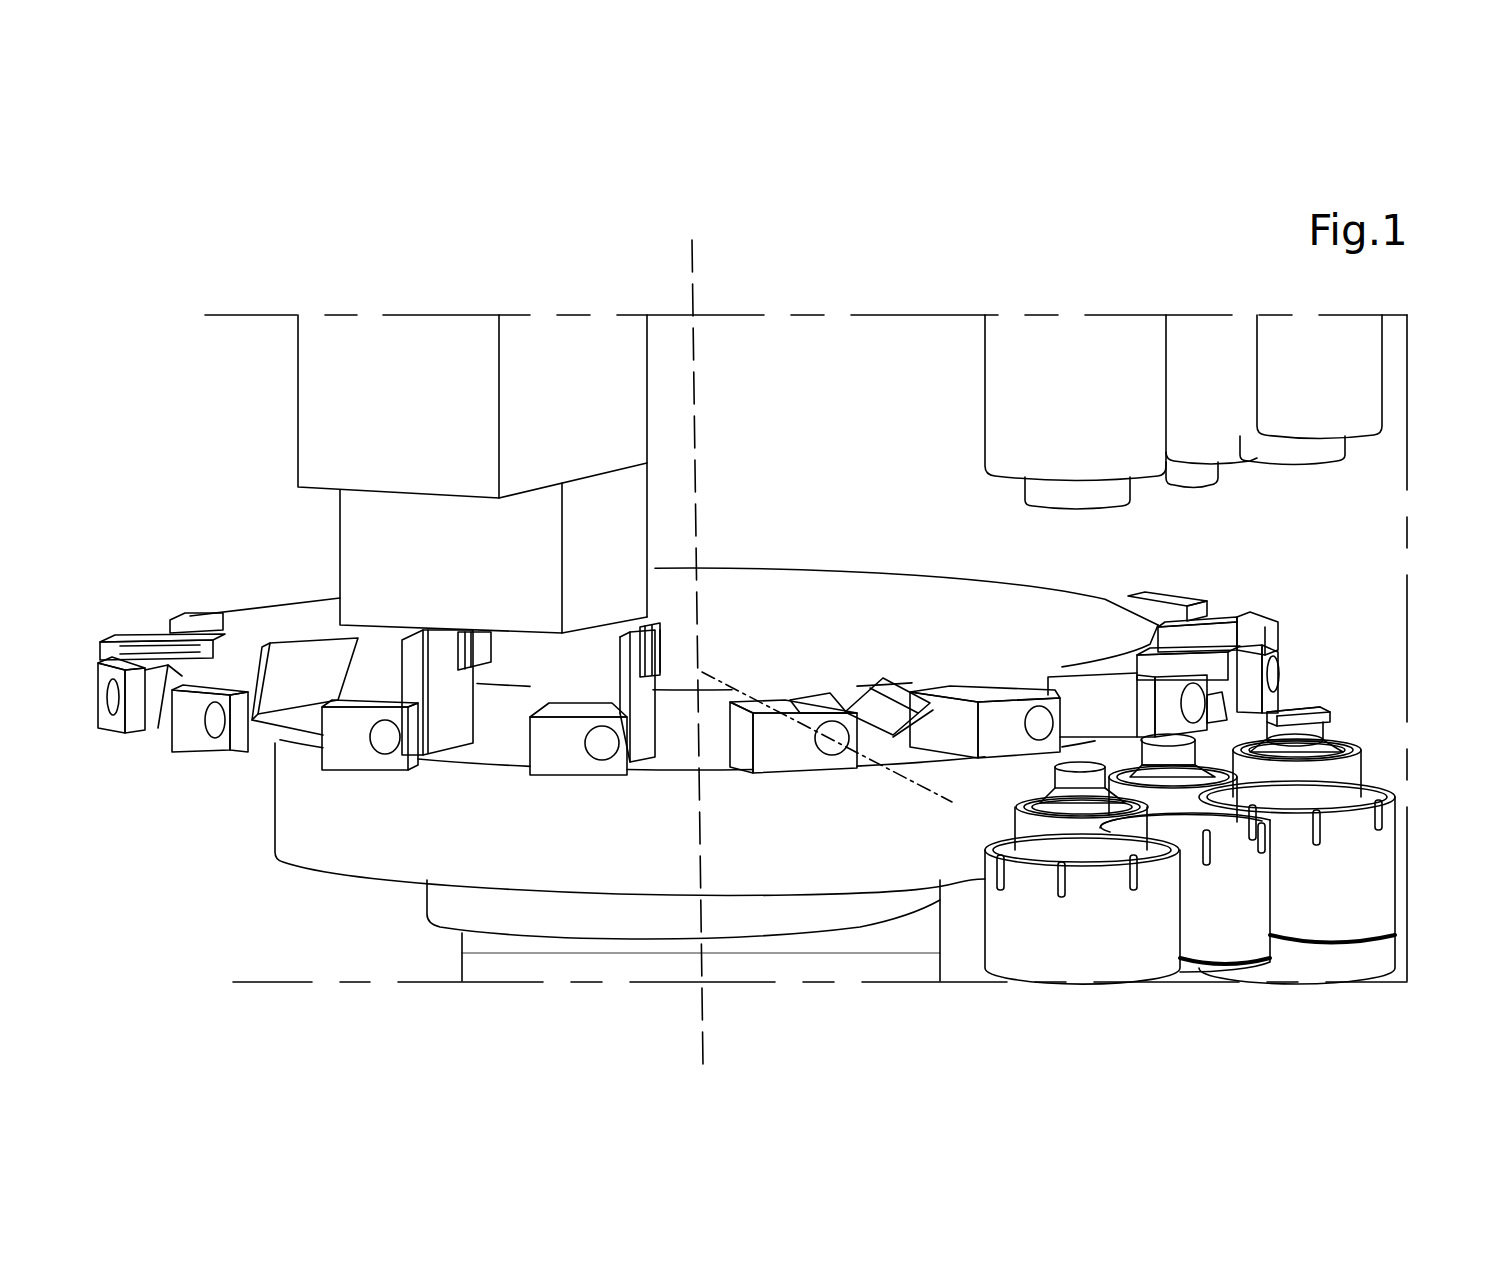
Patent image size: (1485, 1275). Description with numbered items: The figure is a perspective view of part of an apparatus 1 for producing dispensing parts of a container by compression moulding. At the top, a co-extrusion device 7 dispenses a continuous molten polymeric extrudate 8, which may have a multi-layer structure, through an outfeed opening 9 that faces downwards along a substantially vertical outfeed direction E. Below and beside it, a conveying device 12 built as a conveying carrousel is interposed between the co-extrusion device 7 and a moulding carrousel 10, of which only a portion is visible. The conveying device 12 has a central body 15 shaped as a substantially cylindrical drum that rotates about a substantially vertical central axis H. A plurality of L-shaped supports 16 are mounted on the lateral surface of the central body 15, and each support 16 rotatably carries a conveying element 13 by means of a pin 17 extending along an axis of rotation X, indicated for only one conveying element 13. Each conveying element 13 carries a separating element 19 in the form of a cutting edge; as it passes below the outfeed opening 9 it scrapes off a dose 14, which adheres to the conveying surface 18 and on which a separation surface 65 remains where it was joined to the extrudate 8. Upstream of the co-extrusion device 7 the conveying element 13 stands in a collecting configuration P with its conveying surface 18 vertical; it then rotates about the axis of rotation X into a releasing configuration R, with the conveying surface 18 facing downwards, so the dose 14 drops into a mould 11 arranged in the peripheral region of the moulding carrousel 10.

The apparatus 1 is at (448, 260).
The co-extrusion device 7 is at (612, 507).
The extrudate 8 is at (478, 650).
The outfeed opening 9 is at (523, 682).
The moulding carrousel 10 is at (1269, 1014).
The mould 11 is at (1365, 735).
The conveying device 12 is at (859, 494).
The conveying element 13 is at (267, 655).
The dose 14 is at (658, 642).
The central body 15 is at (903, 600).
The support 16 is at (345, 746).
The pin 17 is at (824, 748).
The conveying surface 18 is at (445, 690).
The separating element 19 is at (307, 638).
The separation surface 65 is at (645, 627).
The central axis H is at (697, 368).
The outfeed direction E is at (471, 553).
The axis of rotation X is at (720, 665).
The collecting configuration P is at (407, 803).
The releasing configuration R is at (1091, 941).